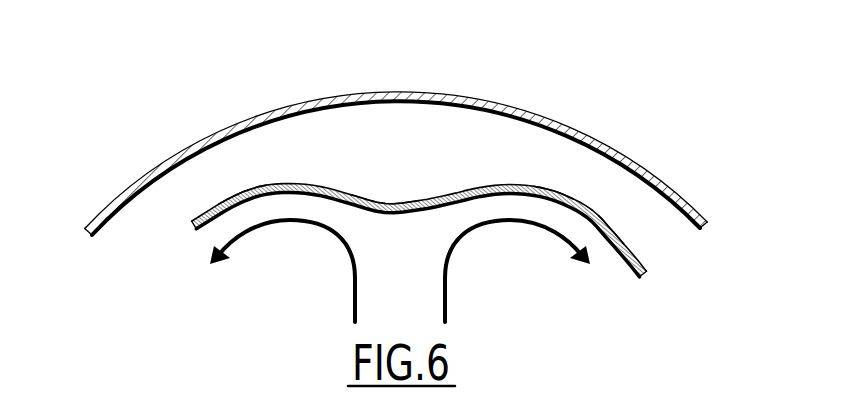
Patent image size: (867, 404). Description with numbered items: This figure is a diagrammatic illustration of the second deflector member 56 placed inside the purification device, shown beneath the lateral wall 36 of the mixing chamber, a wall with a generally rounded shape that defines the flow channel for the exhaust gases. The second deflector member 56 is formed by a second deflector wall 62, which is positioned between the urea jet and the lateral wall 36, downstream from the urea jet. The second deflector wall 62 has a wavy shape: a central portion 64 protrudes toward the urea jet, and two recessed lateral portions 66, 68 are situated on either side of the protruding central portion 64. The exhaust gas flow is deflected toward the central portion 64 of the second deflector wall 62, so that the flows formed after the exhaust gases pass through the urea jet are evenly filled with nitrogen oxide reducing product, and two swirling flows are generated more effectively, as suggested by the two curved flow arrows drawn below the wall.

The lateral wall 36 is at (466, 96).
The second deflector member 56 is at (510, 172).
The second deflector wall 62 is at (617, 230).
The central portion 64 is at (388, 204).
The recessed lateral portion 66 is at (247, 184).
The recessed lateral portion 68 is at (554, 189).